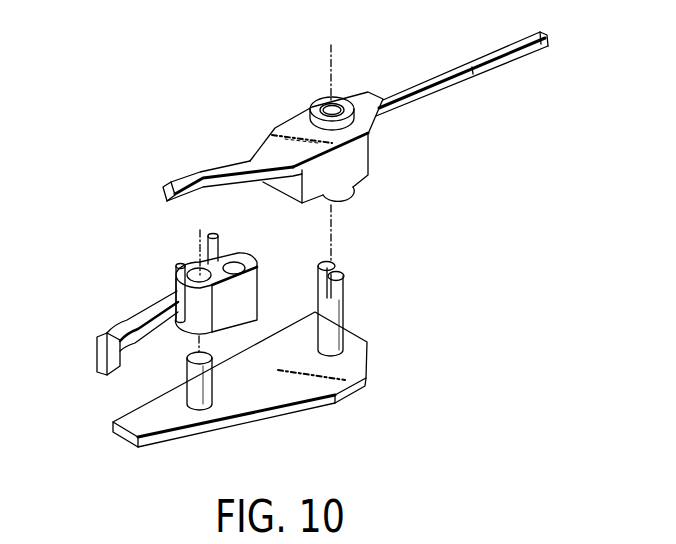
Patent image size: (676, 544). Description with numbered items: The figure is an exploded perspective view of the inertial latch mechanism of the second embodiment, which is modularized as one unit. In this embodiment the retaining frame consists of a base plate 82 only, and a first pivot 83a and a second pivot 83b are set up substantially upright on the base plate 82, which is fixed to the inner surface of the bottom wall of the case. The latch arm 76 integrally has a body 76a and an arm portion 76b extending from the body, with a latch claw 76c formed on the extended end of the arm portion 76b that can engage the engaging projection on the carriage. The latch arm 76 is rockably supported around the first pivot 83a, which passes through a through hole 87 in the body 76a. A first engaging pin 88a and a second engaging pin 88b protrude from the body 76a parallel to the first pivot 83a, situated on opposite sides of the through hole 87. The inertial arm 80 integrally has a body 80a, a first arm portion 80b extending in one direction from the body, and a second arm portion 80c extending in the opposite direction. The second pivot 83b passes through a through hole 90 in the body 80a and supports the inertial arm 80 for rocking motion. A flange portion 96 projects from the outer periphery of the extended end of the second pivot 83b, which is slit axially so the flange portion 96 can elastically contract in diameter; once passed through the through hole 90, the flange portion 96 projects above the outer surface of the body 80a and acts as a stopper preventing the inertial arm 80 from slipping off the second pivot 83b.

The inertial arm 80 is at (268, 119).
The body 80a is at (355, 165).
The first arm portion 80b is at (208, 172).
The second arm portion 80c is at (452, 88).
The through hole 90 is at (328, 108).
The latch arm 76 is at (144, 273).
The body 76a is at (249, 296).
The arm portion 76b is at (125, 312).
The latch claw 76c is at (96, 364).
The through hole 87 is at (210, 280).
The first engaging pin 88a is at (178, 264).
The second engaging pin 88b is at (215, 234).
The base plate 82 is at (275, 393).
The first pivot 83a is at (203, 390).
The second pivot 83b is at (335, 313).
The flange portion 96 is at (341, 270).